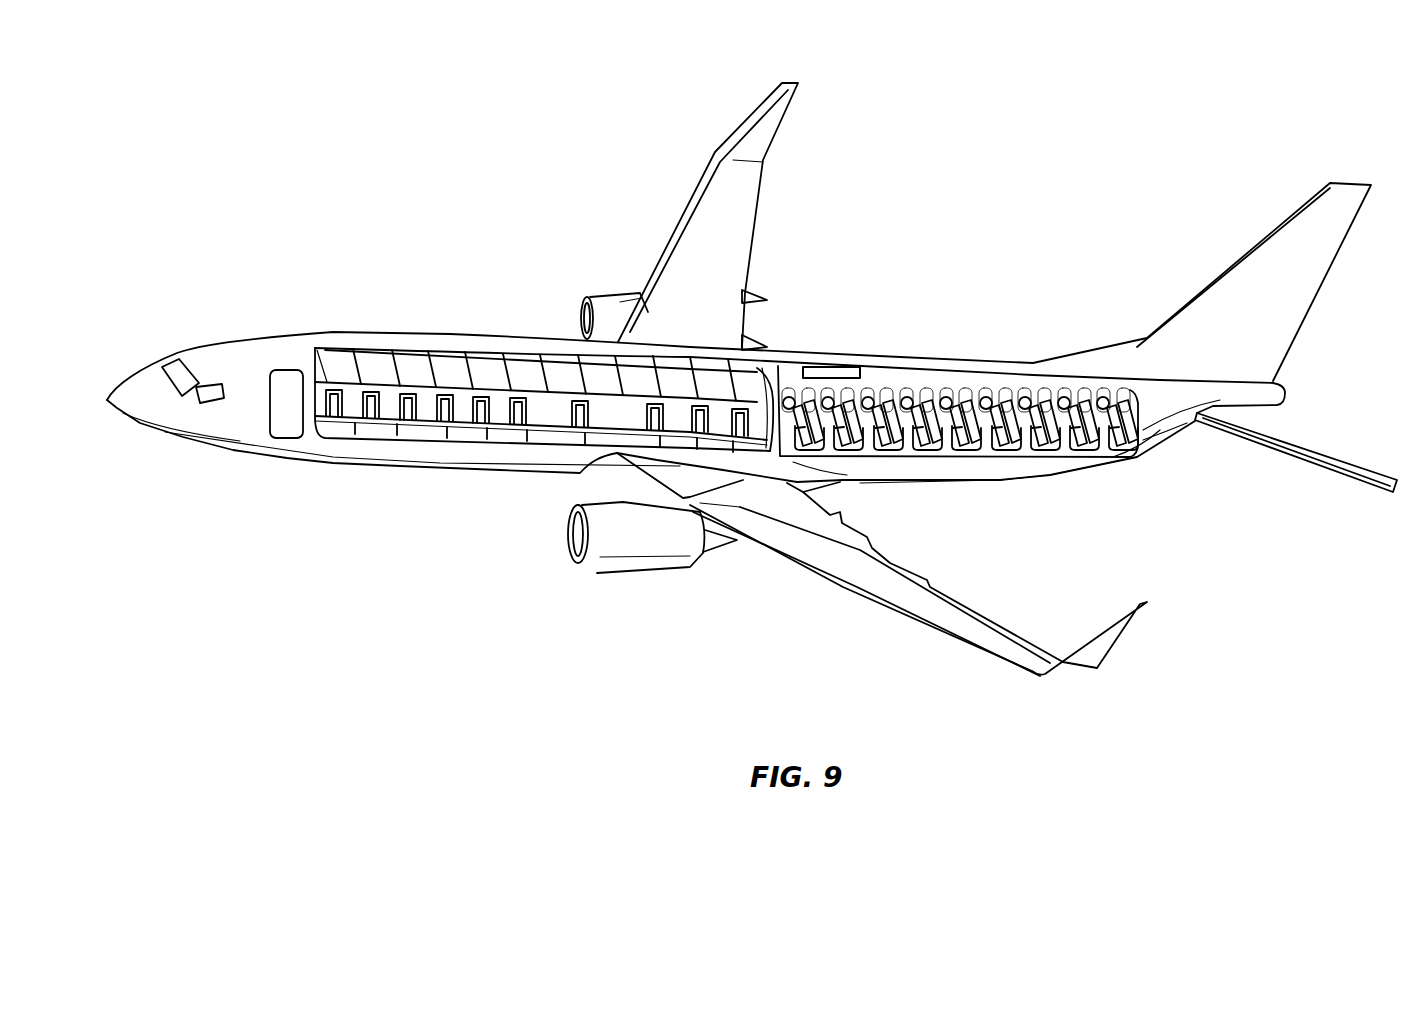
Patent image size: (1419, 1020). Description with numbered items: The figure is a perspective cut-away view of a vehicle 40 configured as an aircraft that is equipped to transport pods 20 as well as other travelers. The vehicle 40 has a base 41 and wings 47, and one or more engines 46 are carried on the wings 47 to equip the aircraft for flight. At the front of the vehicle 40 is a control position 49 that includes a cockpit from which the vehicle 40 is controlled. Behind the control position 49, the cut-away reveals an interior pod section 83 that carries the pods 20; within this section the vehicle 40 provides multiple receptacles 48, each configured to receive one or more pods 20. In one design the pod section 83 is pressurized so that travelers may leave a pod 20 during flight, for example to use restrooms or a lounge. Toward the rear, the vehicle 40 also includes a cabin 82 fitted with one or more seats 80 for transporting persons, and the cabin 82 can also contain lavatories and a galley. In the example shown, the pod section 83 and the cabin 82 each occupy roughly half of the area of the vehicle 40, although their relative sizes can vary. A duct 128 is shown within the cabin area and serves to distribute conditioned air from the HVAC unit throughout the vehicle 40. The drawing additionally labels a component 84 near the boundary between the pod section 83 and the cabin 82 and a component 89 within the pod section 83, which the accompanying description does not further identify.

The pod 20 is at (560, 370).
The vehicle 40 is at (1020, 465).
The base 41 is at (465, 434).
The engine 46 is at (592, 315).
The wing 47 is at (748, 202).
The receptacle 48 is at (553, 420).
The control position 49 is at (205, 362).
The seat 80 is at (860, 418).
The cabin 82 is at (948, 372).
The pod section 83 is at (392, 338).
The partition 84 is at (767, 380).
The berth seats 89 is at (343, 425).
The duct 128 is at (838, 368).